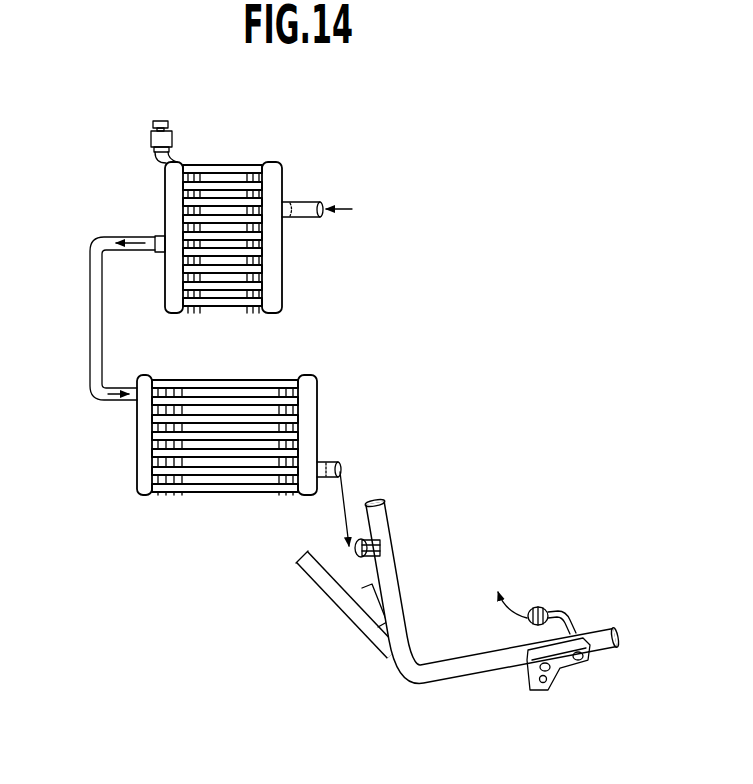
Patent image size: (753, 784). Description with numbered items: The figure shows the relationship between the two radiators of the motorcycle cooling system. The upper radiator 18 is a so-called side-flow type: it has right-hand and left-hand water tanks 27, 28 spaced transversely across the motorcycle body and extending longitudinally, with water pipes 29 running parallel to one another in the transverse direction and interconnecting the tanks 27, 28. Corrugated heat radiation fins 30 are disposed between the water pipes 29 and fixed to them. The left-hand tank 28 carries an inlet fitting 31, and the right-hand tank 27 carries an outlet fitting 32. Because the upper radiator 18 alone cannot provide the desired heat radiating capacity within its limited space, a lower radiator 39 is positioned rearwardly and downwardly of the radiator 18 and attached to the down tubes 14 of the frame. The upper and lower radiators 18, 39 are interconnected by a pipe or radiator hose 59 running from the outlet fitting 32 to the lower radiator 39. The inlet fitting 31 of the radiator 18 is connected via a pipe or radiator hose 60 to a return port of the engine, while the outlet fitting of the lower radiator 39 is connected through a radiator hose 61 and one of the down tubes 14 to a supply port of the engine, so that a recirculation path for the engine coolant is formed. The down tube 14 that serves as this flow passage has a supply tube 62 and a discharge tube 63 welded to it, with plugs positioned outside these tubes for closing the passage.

The down tubes 14 is at (483, 672).
The radiator 18 is at (220, 199).
The right-hand water tank 27 is at (167, 195).
The left-hand water tank 28 is at (283, 175).
The water pipe 29 is at (231, 165).
The corrugated heat radiation fins 30 is at (205, 168).
The inlet fitting 31 is at (296, 208).
The outlet fitting 32 is at (162, 252).
The lower radiator 39 is at (294, 372).
The pipe or radiator hose 59 is at (88, 337).
The pipe or radiator hose 60 is at (320, 213).
The radiator hose 61 is at (338, 458).
The supply tube 62 is at (383, 545).
The discharge tube 63 is at (559, 612).